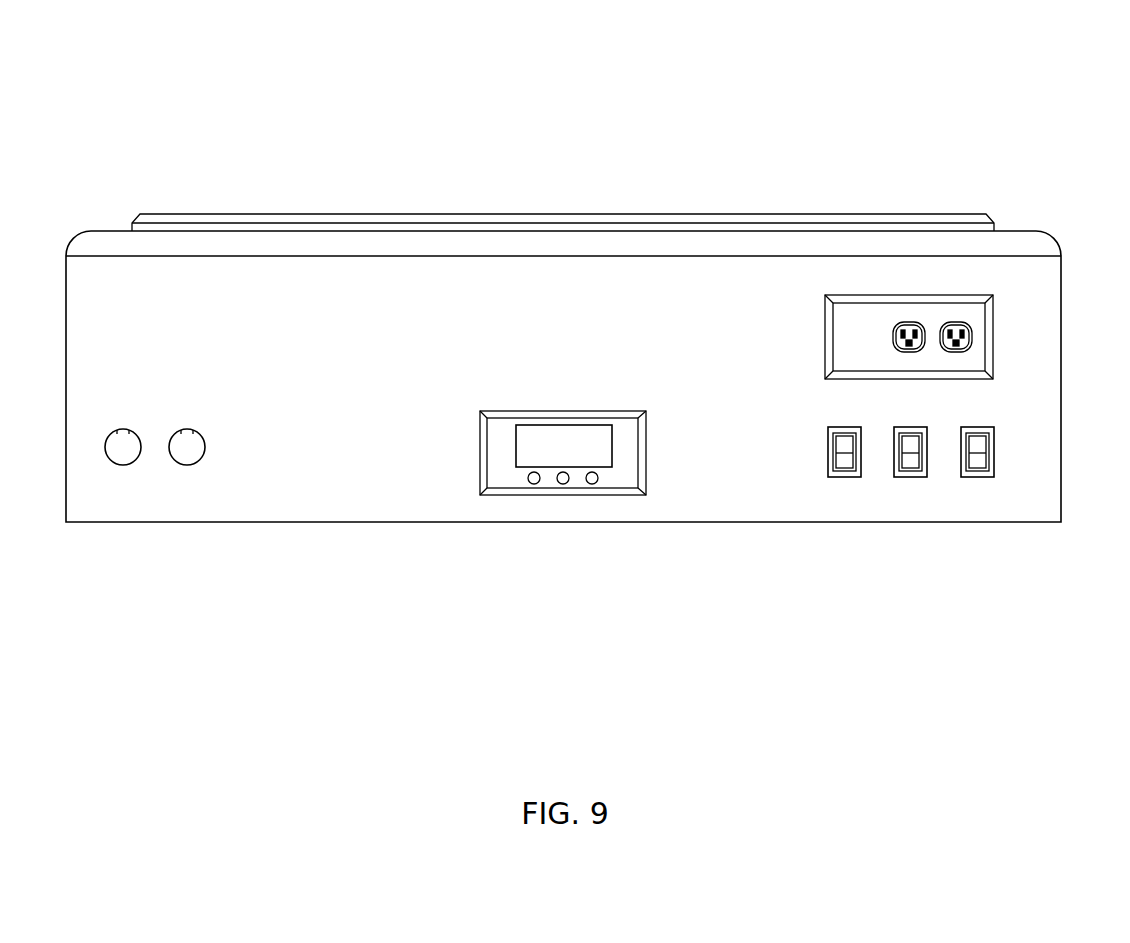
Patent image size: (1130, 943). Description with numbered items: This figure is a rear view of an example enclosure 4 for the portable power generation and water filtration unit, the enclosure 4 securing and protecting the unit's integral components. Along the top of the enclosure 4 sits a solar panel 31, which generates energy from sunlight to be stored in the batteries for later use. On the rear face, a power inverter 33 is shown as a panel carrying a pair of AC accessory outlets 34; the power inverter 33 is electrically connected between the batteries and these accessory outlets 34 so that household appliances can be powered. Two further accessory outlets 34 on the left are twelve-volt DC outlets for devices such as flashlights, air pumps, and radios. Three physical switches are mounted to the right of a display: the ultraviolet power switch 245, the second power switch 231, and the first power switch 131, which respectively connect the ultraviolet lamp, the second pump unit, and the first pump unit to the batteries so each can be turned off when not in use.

The enclosure 4 is at (962, 30).
The solar panel 31 is at (545, 218).
The power inverter 33 is at (844, 330).
The accessory outlet 34 is at (910, 324).
The first power switch 131 is at (990, 461).
The second power switch 231 is at (912, 469).
The ultraviolet power switch 245 is at (841, 448).